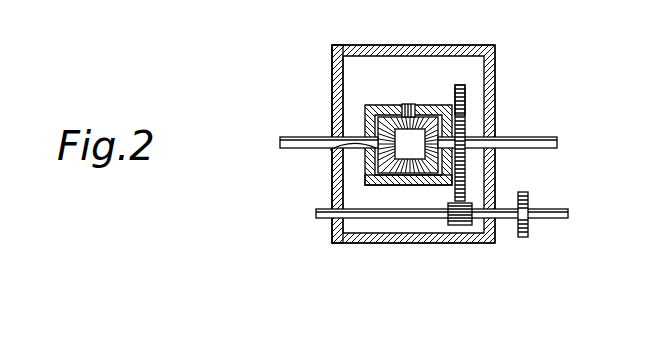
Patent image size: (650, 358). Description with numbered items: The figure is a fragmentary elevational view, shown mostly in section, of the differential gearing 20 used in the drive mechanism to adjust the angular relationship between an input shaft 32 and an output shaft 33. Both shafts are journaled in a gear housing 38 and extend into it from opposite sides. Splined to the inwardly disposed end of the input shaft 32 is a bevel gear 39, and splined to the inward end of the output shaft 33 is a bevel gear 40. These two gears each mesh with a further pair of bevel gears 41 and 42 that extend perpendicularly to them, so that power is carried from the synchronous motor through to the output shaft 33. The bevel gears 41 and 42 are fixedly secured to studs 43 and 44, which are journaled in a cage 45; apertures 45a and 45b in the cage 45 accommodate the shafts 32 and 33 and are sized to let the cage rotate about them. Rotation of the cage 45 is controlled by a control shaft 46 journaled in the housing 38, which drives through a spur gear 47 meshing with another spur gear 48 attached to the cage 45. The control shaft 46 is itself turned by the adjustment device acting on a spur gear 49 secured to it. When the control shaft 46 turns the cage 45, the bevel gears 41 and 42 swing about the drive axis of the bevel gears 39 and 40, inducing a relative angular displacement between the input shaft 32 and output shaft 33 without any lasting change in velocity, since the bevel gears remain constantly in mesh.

The differential gearing 20 is at (403, 29).
The gear housing 38 is at (432, 45).
The cage 45 is at (334, 70).
The aperture 45a is at (330, 150).
The aperture 45b is at (455, 135).
The bevel gear 39 is at (376, 130).
The bevel gear 41 is at (396, 117).
The bevel gear 42 is at (392, 170).
The stud 43 is at (409, 106).
The stud 44 is at (410, 178).
The bevel gear 40 is at (442, 180).
The input shaft 32 is at (304, 137).
The output shaft 33 is at (528, 137).
The spur gear 48 is at (466, 107).
The control shaft 46 is at (545, 218).
The spur gear 47 is at (461, 226).
The spur gear 49 is at (528, 200).